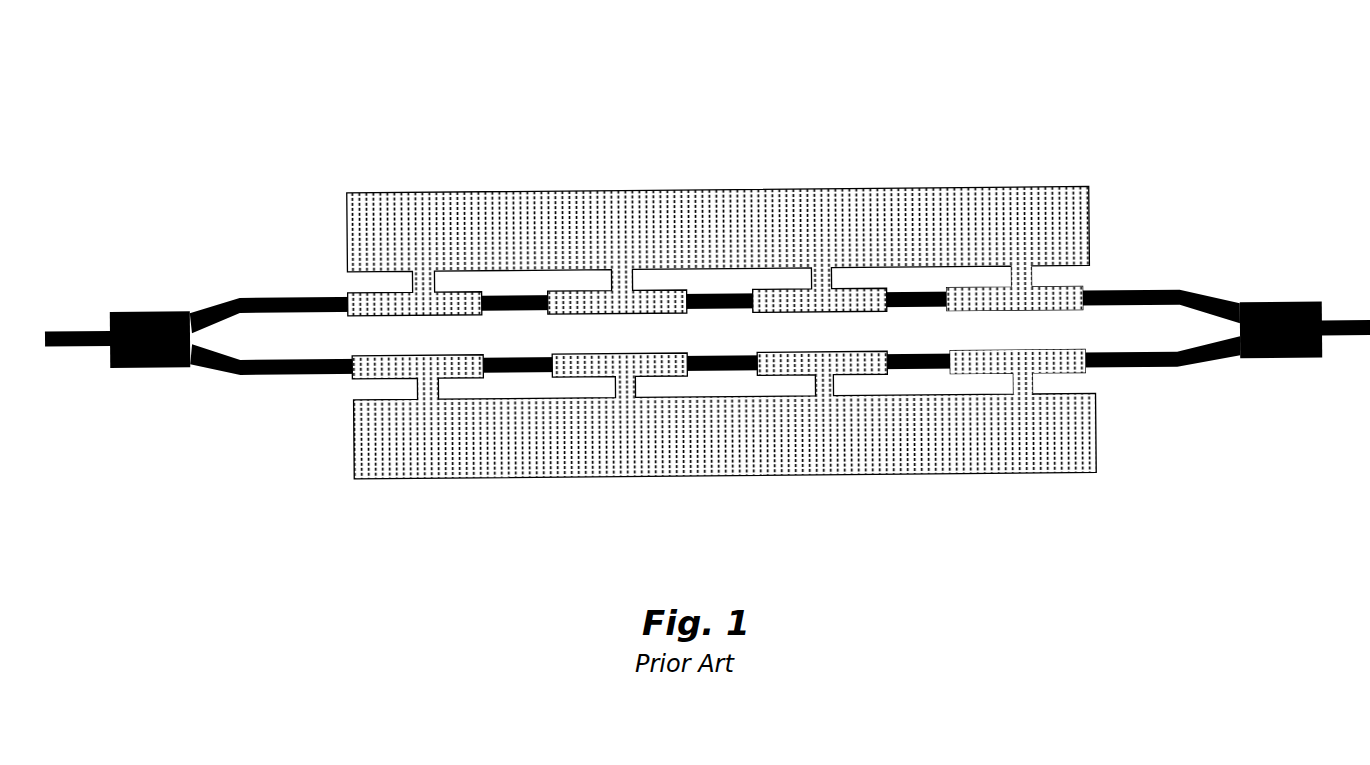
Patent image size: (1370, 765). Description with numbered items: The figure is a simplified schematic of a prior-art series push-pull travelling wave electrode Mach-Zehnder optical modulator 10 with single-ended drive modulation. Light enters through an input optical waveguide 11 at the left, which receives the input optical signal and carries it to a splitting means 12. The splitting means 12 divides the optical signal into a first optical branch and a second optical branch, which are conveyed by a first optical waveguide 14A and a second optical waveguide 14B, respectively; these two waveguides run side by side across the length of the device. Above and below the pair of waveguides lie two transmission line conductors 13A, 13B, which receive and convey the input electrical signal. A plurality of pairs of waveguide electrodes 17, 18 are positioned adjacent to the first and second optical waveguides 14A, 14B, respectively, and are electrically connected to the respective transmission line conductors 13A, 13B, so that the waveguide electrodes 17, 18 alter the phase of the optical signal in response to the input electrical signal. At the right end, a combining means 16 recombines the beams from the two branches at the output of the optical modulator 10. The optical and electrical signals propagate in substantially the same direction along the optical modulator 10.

The optical modulator 10 is at (770, 160).
The input optical waveguide 11 is at (88, 347).
The splitting means 12 is at (170, 308).
The transmission line conductor 13A is at (718, 198).
The transmission line conductor 13B is at (724, 479).
The first optical waveguide 14A is at (1140, 288).
The second optical waveguide 14B is at (1144, 370).
The combining means 16 is at (1285, 362).
The waveguide electrode 17 is at (1050, 293).
The waveguide electrode 18 is at (1043, 385).